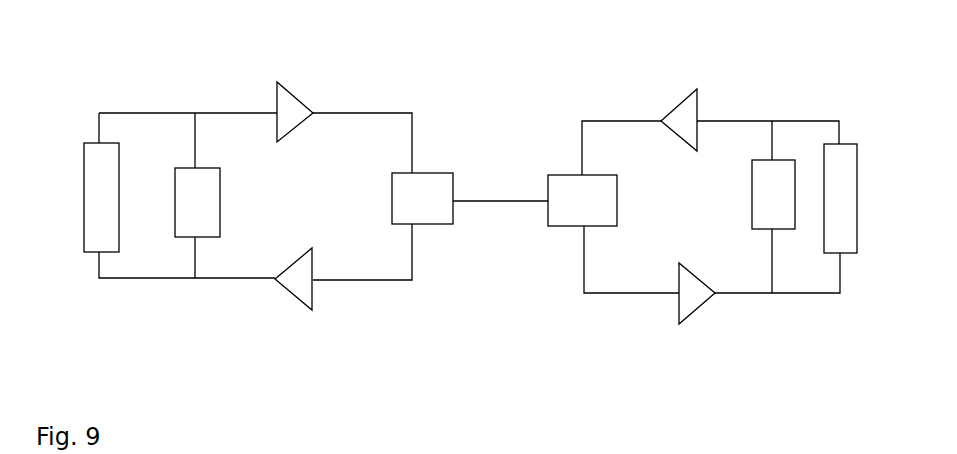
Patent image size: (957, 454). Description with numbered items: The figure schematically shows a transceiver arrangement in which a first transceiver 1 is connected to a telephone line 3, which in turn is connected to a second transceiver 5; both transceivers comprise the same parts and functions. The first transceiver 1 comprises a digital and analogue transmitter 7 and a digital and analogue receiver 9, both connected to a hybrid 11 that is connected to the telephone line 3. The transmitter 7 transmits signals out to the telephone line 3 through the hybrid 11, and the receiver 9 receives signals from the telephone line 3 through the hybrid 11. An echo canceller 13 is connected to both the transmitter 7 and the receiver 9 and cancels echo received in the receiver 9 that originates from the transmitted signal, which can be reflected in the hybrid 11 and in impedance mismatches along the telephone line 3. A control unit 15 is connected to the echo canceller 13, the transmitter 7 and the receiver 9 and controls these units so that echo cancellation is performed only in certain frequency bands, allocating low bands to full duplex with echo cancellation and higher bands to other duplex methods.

The first transceiver 1 is at (340, 353).
The telephone line 3 is at (493, 203).
The second transceiver 5 is at (703, 346).
The digital and analogue transmitter 7 is at (300, 101).
The digital and analogue receiver 9 is at (292, 298).
The hybrid 11 is at (432, 171).
The echo canceller 13 is at (220, 207).
The control unit 15 is at (84, 166).